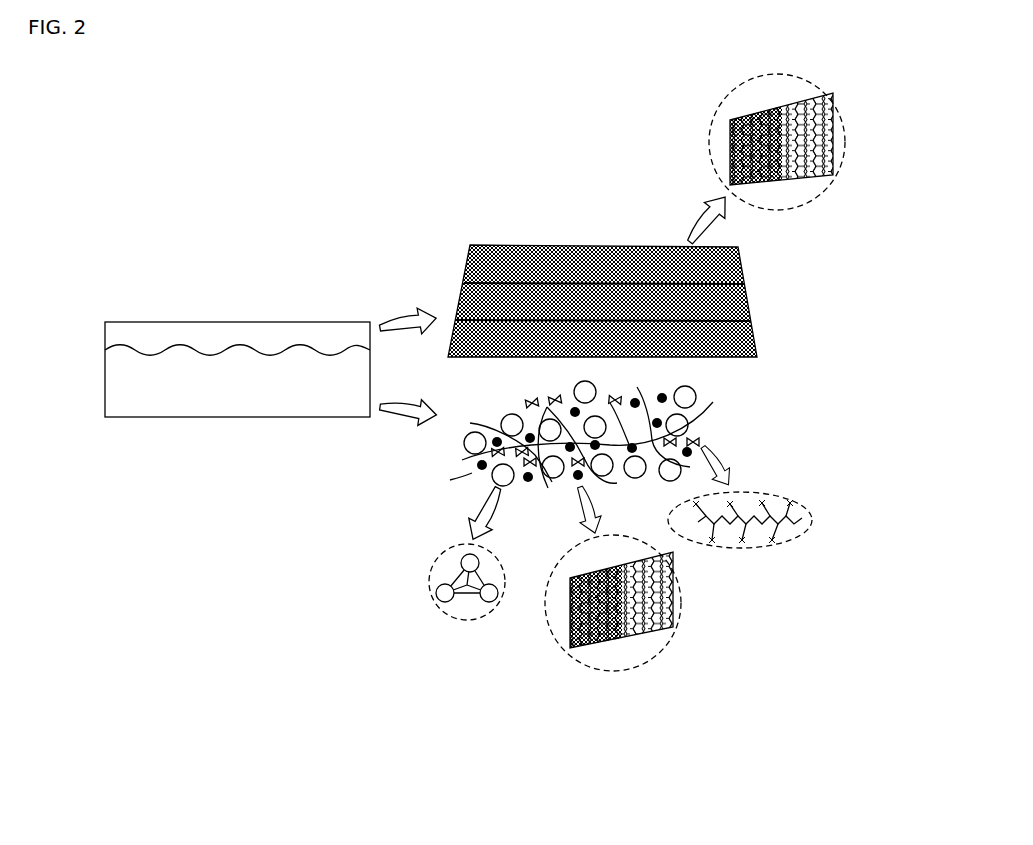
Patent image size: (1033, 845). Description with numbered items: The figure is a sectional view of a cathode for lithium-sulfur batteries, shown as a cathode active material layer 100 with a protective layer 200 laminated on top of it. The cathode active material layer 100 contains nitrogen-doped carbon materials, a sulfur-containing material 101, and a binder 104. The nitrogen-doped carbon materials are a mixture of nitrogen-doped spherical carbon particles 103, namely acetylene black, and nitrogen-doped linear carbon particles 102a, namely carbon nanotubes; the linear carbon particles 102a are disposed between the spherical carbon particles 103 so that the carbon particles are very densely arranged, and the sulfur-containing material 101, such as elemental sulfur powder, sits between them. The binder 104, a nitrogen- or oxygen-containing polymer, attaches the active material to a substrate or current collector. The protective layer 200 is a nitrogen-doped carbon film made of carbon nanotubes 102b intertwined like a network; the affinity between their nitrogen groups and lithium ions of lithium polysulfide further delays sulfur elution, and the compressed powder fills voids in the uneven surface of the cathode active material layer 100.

The cathode active material layer 100 is at (106, 386).
The protective layer 200 is at (106, 341).
The sulfur-containing material 101 is at (480, 470).
The nitrogen-doped linear carbon particles 102a is at (658, 645).
The carbon nanotube 102b is at (793, 205).
The nitrogen-doped spherical carbon particles 103 is at (481, 608).
The binder 104 is at (757, 540).